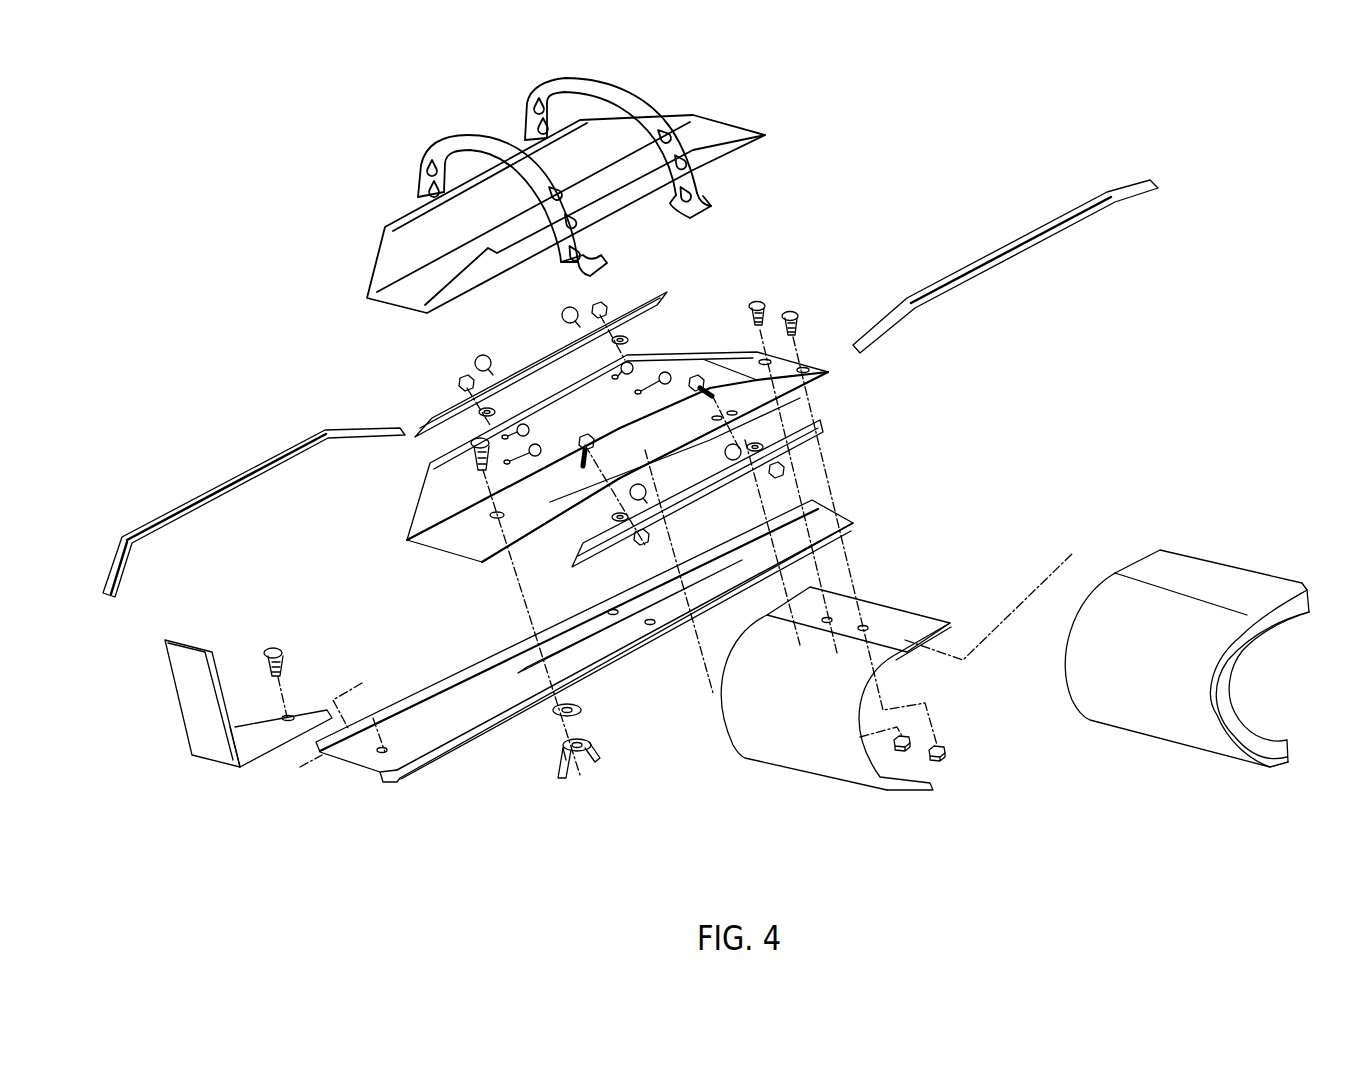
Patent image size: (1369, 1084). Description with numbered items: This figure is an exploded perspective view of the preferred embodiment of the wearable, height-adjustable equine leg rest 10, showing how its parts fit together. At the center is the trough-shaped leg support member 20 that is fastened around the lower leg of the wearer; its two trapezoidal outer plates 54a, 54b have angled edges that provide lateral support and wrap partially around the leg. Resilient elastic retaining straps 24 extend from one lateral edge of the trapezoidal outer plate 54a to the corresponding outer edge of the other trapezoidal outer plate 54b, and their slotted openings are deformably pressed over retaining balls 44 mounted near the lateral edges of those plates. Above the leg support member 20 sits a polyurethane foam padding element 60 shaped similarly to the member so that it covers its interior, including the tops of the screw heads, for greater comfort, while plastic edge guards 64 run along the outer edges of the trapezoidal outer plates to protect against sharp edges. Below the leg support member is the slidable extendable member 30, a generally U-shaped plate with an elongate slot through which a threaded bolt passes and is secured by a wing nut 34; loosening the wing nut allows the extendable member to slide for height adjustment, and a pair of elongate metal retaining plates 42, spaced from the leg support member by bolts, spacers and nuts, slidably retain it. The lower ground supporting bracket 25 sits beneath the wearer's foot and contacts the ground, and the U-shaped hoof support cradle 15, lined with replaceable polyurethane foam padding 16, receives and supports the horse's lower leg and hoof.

The equine leg rest 10 is at (274, 300).
The hoof support cradle 15 is at (798, 748).
The polyurethane foam padding 16 is at (1148, 727).
The leg support member 20 is at (440, 545).
The retaining straps 24 is at (563, 84).
The ground supporting bracket 25 is at (186, 732).
The extendable member 30 is at (628, 655).
The wing nut 34 is at (560, 778).
The retaining plates 42 is at (430, 420).
The retaining balls 44 is at (560, 316).
The trapezoidal outer plate 54a is at (603, 421).
The trapezoidal outer plate 54b is at (557, 512).
The polyurethane foam padding element 60 is at (393, 254).
The plastic edge guards 64 is at (194, 510).